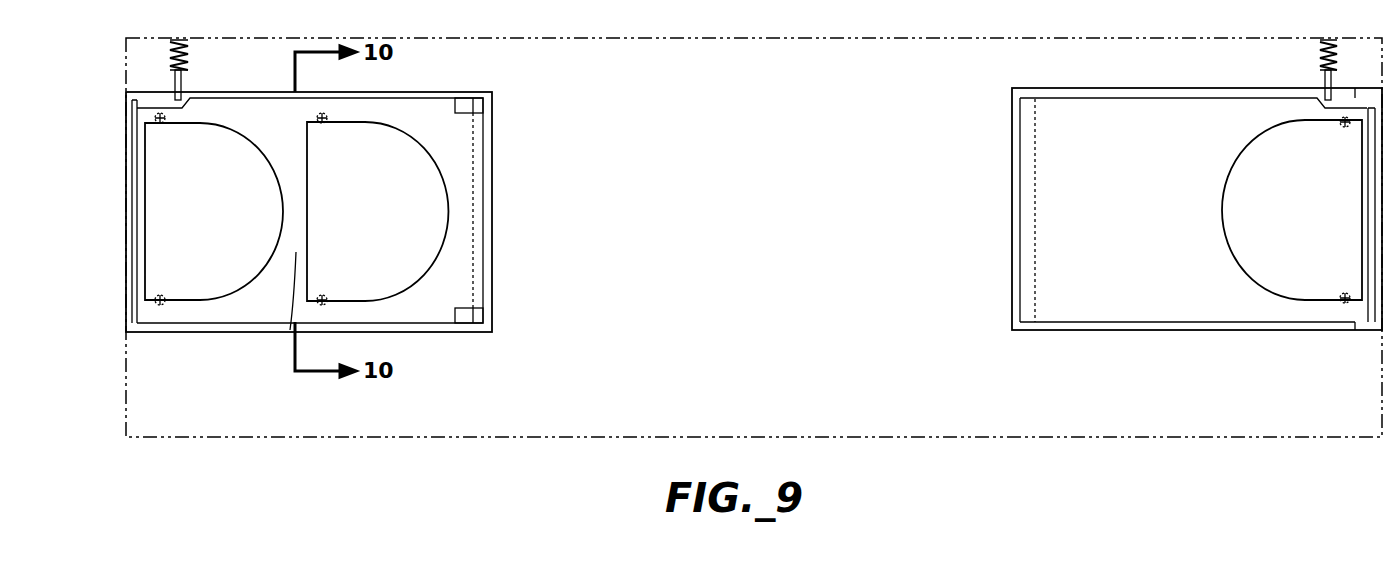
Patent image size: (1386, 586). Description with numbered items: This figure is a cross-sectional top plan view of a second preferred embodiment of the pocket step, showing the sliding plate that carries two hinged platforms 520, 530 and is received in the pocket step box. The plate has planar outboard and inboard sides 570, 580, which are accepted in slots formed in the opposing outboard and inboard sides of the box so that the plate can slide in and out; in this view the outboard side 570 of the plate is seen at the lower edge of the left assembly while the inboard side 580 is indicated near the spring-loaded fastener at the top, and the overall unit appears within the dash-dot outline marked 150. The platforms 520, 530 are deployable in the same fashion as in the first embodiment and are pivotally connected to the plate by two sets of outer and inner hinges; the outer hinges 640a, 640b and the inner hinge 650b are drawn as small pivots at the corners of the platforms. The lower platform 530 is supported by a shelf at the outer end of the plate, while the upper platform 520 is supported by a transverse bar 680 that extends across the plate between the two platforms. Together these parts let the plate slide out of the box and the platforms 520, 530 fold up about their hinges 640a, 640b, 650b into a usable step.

The tray module 150 is at (882, 38).
The hinged platform 520 is at (428, 188).
The hinged platform 530 is at (163, 198).
The outboard side of plate 570 is at (205, 333).
The inboard side of plate 580 is at (235, 100).
The outer hinge 640a is at (160, 113).
The outer hinge 640b is at (325, 306).
The inner hinge 650b is at (322, 113).
The transverse bar 680 is at (290, 330).